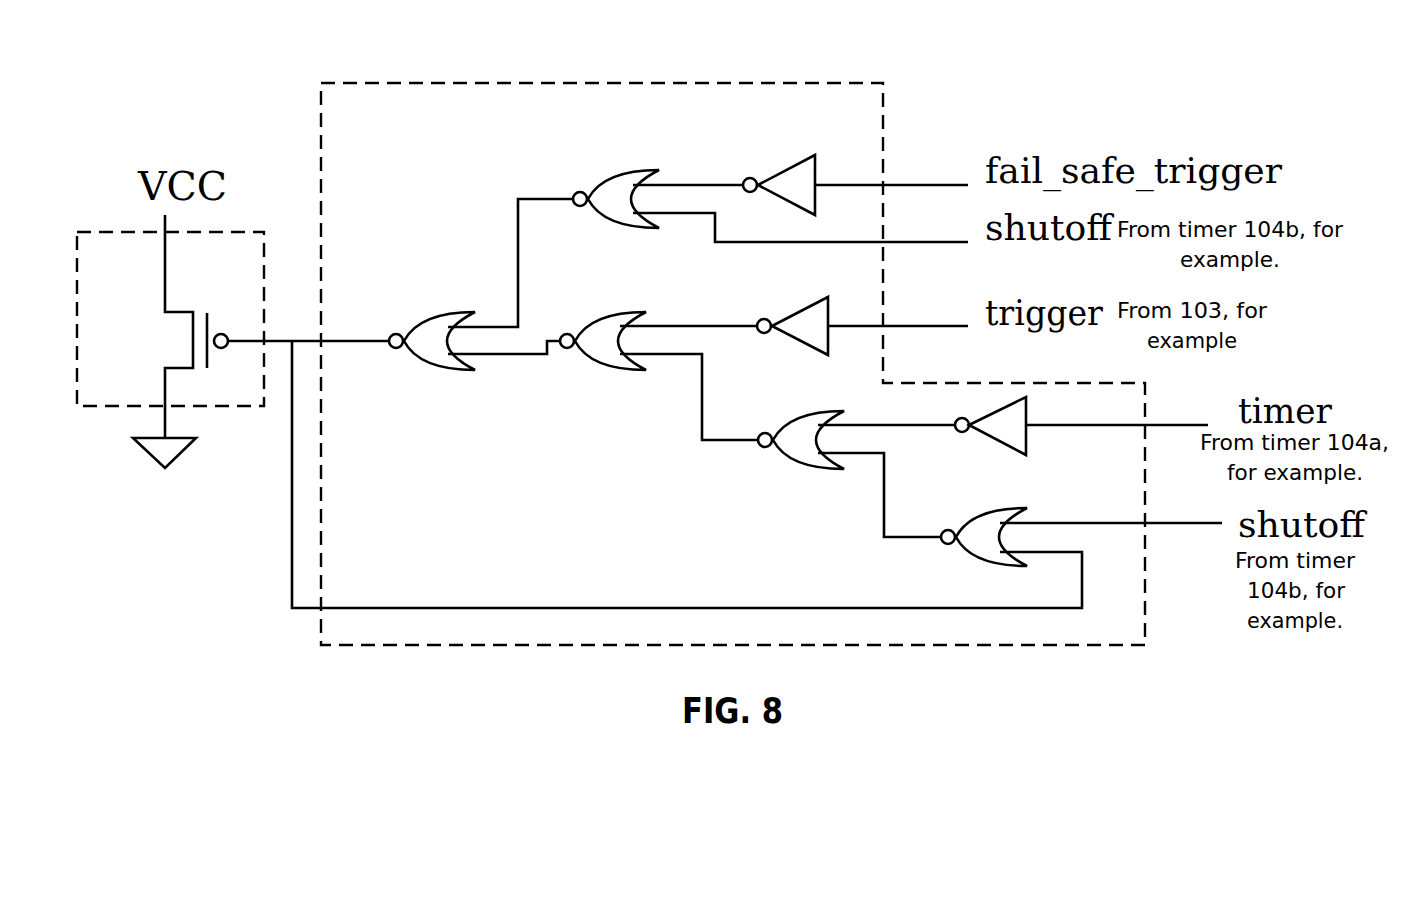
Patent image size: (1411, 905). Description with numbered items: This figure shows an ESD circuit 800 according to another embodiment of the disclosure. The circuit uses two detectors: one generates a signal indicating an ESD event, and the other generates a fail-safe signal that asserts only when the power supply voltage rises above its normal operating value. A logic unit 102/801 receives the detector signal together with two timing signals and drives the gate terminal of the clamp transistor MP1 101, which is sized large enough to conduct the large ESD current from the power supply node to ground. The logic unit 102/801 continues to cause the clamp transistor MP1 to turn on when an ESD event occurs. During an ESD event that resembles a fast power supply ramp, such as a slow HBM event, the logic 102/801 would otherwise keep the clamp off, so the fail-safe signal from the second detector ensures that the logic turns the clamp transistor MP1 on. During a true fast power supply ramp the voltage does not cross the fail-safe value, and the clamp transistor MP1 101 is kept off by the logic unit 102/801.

The ESD circuit 800 is at (725, 337).
The logic unit 102 is at (725, 357).
The logic unit 801 is at (725, 357).
The clamp transistor 101 is at (170, 341).
The clamp transistor MP1 is at (163, 341).